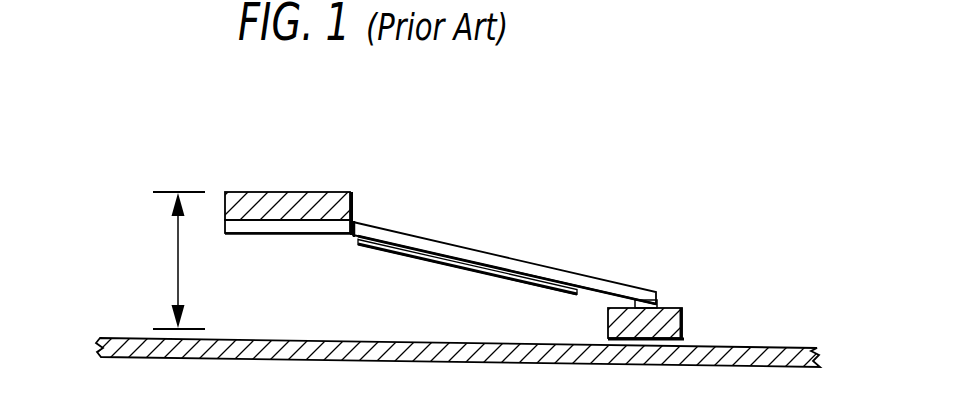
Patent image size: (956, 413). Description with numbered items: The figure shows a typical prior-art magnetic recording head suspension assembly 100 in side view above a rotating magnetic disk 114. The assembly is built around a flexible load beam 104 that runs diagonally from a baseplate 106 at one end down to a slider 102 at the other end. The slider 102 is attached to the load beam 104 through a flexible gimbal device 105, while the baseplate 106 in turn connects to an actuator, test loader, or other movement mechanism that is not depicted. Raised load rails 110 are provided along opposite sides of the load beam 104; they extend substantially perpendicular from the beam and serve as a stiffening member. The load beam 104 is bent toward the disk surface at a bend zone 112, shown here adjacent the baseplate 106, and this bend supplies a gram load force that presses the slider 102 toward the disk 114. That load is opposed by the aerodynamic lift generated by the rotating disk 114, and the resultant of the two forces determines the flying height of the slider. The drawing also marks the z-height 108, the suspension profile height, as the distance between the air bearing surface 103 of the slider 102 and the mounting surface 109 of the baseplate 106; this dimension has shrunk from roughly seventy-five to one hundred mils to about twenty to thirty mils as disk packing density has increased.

The magnetic recording head suspension assembly 100 is at (475, 105).
The slider 102 is at (682, 321).
The air bearing surface 103 is at (670, 343).
The flexible load beam 104 is at (526, 261).
The flexible gimbal device 105 is at (660, 305).
The baseplate 106 is at (353, 208).
The z-height 108 is at (176, 268).
The mounting surface 109 is at (312, 191).
The raised load rails 110 is at (422, 262).
The bend zone 112 is at (353, 222).
The rotating magnetic disk 114 is at (810, 347).